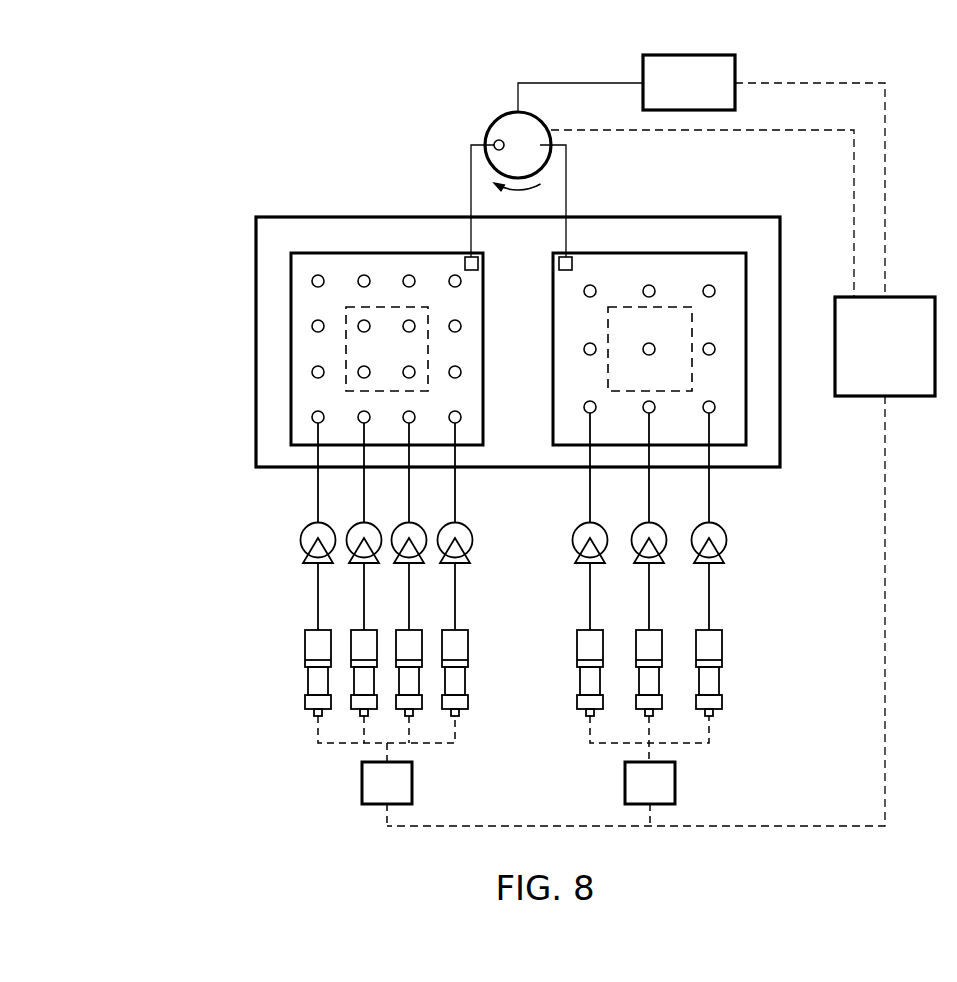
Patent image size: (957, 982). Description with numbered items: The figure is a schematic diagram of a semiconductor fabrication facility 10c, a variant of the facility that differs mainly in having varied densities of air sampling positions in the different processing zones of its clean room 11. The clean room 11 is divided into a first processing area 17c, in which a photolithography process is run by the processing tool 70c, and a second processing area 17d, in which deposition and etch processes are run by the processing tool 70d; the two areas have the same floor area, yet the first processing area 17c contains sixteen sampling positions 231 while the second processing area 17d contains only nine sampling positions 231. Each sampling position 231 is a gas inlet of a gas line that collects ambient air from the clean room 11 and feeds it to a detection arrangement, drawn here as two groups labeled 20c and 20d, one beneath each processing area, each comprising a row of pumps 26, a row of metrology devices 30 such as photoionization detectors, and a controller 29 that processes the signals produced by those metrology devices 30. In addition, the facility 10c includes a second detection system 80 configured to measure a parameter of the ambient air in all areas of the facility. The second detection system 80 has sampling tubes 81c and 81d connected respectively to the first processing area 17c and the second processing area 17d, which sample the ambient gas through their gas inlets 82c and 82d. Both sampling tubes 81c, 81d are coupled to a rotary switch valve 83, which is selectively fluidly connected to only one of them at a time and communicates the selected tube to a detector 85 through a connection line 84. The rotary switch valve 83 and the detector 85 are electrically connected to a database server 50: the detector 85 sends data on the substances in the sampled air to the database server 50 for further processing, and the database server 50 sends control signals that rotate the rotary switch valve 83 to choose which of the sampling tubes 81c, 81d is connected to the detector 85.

The semiconductor fabrication facility 10c is at (72, 53).
The clean room 11 is at (256, 247).
The first processing area 17c is at (305, 308).
The second processing area 17d is at (673, 260).
The processing tool 70c is at (346, 342).
The processing tool 70d is at (680, 307).
The gas inlet 231 is at (312, 372).
The second detection system 80 is at (312, 95).
The rotary switch valve 83 is at (495, 120).
The connection line 84 is at (570, 83).
The detector 85 is at (674, 95).
The sampling tube 81c is at (470, 177).
The sampling tube 81d is at (566, 172).
The gas inlet 82c is at (464, 258).
The gas inlet 82d is at (572, 258).
The database server 50 is at (868, 358).
The pump 26 is at (305, 545).
The metrology device 30 is at (316, 647).
The first sensor group 20c is at (310, 746).
The second sensor group 20d is at (726, 746).
The controller 29 is at (371, 797).